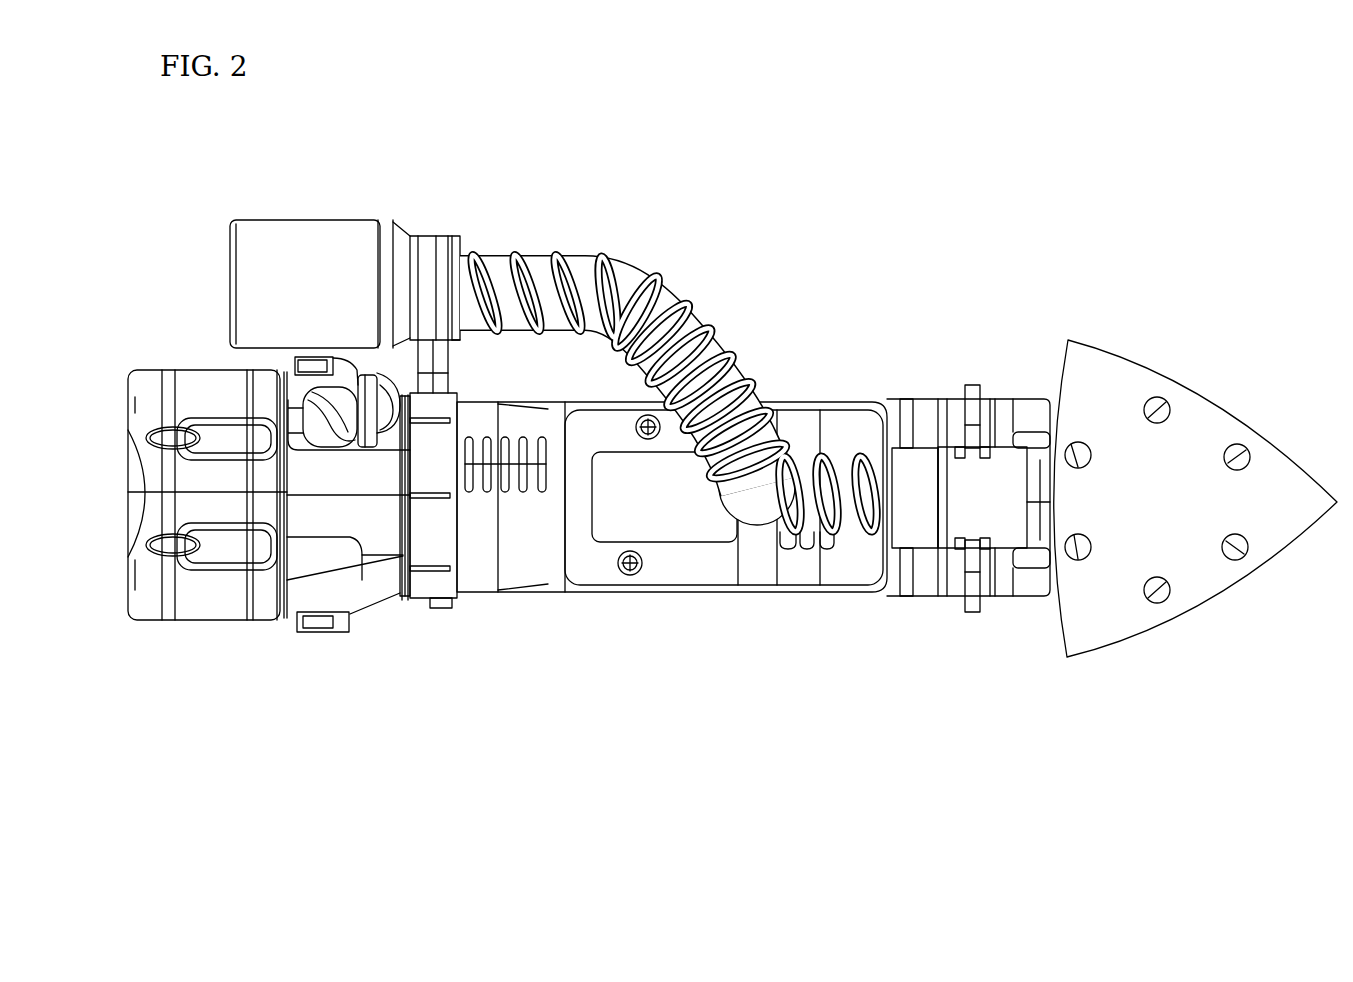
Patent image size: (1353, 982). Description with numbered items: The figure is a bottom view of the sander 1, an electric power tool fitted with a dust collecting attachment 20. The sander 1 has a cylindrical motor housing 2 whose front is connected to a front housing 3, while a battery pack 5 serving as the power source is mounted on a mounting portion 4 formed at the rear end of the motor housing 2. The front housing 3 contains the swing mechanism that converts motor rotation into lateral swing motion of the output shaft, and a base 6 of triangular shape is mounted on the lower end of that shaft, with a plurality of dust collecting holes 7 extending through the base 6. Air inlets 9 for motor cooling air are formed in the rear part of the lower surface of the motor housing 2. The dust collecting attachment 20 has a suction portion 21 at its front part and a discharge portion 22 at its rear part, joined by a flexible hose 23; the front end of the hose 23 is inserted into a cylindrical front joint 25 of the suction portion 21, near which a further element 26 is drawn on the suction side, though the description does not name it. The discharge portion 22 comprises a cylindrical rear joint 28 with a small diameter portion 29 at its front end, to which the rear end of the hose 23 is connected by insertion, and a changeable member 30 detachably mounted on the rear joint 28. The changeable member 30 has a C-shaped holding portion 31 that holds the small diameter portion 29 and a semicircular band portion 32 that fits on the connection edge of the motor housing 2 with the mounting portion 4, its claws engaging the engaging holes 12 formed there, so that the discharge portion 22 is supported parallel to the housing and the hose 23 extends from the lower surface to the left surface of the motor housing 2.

The sander 1 is at (897, 461).
The motor housing 2 is at (805, 435).
The front housing 3 is at (1020, 415).
The mounting portion 4 is at (346, 600).
The battery pack 5 is at (208, 605).
The base 6 is at (1125, 372).
The dust collecting holes 7 is at (1168, 405).
The air inlets 9 is at (506, 430).
The engaging holes 12 is at (442, 600).
The dust collecting attachment 20 is at (670, 351).
The suction portion 21 is at (932, 430).
The discharge portion 22 is at (466, 261).
The flexible hose 23 is at (700, 345).
The front joint 25 is at (1005, 545).
The clamp ring 26 is at (973, 392).
The rear joint 28 is at (322, 235).
The small diameter portion 29 is at (452, 250).
The changeable member 30 is at (462, 352).
The holding portion 31 is at (440, 250).
The band portion 32 is at (457, 543).